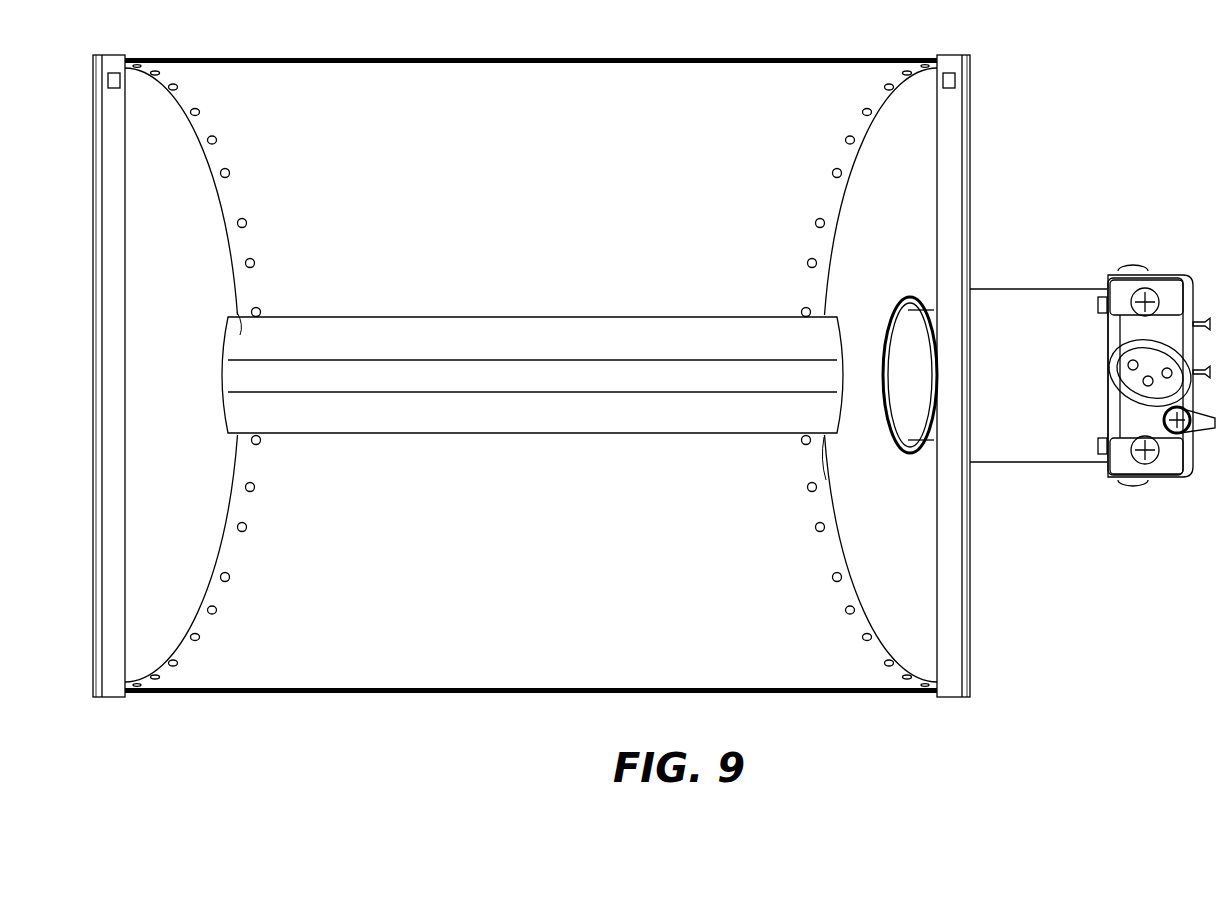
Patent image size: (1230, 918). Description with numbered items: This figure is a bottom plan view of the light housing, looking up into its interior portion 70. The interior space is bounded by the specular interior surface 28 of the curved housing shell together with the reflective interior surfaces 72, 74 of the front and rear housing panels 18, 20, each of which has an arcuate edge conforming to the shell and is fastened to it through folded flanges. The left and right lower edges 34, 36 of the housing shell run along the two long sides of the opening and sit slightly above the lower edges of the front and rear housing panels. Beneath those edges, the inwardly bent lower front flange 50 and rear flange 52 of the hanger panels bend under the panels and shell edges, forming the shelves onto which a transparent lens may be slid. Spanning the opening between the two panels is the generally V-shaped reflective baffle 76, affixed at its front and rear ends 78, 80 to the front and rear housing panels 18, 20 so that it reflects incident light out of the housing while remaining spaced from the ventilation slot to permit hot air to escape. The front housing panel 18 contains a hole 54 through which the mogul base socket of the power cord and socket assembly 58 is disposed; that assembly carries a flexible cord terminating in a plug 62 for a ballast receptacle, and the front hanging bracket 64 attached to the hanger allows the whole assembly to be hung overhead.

The front housing panel 18 is at (923, 148).
The rear housing panel 20 is at (140, 196).
The specular interior surface 28 is at (571, 199).
The left lower edge 34 is at (267, 58).
The right lower edge 36 is at (333, 693).
The lower front flange 50 is at (953, 660).
The rear flange 52 is at (113, 509).
The hole 54 is at (917, 345).
The power cord and socket assembly 58 is at (1008, 300).
The plug 62 is at (1128, 375).
The front hanging bracket 64 is at (1142, 456).
The interior portion 70 is at (732, 102).
The reflective interior surface of front housing panel 72 is at (875, 425).
The reflective interior surface of rear housing panel 74 is at (178, 361).
The reflective baffle 76 is at (670, 330).
The front end of baffle 78 is at (822, 440).
The rear end of baffle 80 is at (240, 305).